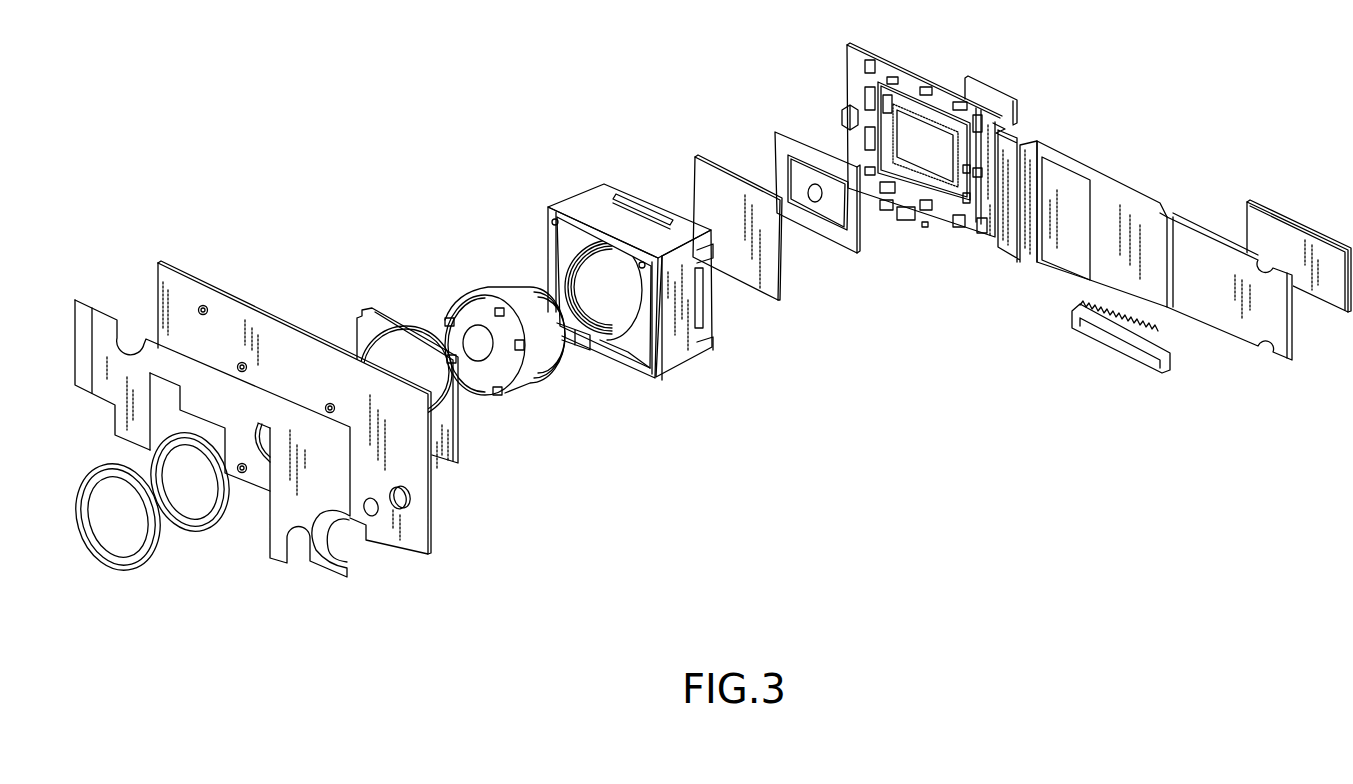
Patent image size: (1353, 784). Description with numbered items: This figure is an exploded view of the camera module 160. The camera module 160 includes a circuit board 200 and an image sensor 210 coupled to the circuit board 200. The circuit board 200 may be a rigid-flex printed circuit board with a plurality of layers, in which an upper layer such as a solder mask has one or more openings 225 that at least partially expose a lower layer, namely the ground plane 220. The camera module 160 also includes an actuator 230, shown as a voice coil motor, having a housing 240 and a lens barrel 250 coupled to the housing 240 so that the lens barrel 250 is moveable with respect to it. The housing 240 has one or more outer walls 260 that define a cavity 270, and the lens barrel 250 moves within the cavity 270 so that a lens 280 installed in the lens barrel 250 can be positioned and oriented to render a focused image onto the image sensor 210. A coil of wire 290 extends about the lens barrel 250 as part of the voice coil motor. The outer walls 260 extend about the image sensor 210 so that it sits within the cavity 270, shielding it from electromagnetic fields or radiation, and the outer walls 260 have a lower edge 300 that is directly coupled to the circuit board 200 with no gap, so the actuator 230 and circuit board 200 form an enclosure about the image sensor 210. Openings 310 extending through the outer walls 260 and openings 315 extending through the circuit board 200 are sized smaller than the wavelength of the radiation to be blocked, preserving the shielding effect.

The camera module 160 is at (948, 400).
The circuit board 200 is at (877, 149).
The image sensor 210 is at (842, 270).
The ground plane 220 is at (862, 47).
The openings 225 is at (865, 90).
The actuator 230 is at (604, 291).
The housing 240 is at (604, 259).
The lens barrel 250 is at (527, 391).
The outer walls 260 is at (670, 357).
The cavity 270 is at (566, 280).
The lens 280 is at (476, 340).
The coil of wire 290 is at (626, 356).
The lower edge 300 is at (717, 277).
The openings 310 is at (637, 190).
The openings 315 is at (883, 62).